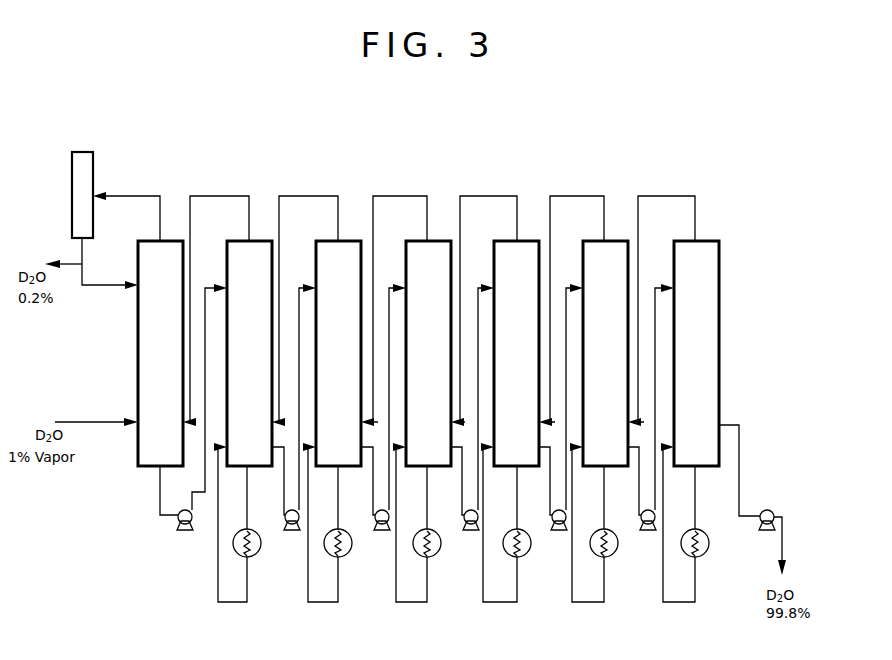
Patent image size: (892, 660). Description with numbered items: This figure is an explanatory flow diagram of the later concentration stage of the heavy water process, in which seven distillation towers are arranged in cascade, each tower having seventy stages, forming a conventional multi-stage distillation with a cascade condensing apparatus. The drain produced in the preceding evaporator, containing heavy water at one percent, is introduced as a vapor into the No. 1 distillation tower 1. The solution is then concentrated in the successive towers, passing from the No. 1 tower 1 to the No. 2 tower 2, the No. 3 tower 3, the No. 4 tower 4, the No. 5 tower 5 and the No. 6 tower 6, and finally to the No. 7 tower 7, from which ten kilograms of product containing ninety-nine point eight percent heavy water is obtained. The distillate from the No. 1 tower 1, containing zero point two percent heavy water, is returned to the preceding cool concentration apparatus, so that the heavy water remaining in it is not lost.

The No. 1 distillation tower 1 is at (160, 353).
The No. 2 distillation tower 2 is at (249, 353).
The No. 3 distillation tower 3 is at (338, 353).
The No. 4 distillation tower 4 is at (428, 353).
The No. 5 distillation tower 5 is at (516, 353).
The No. 6 distillation tower 6 is at (605, 353).
The No. 7 distillation tower 7 is at (696, 353).